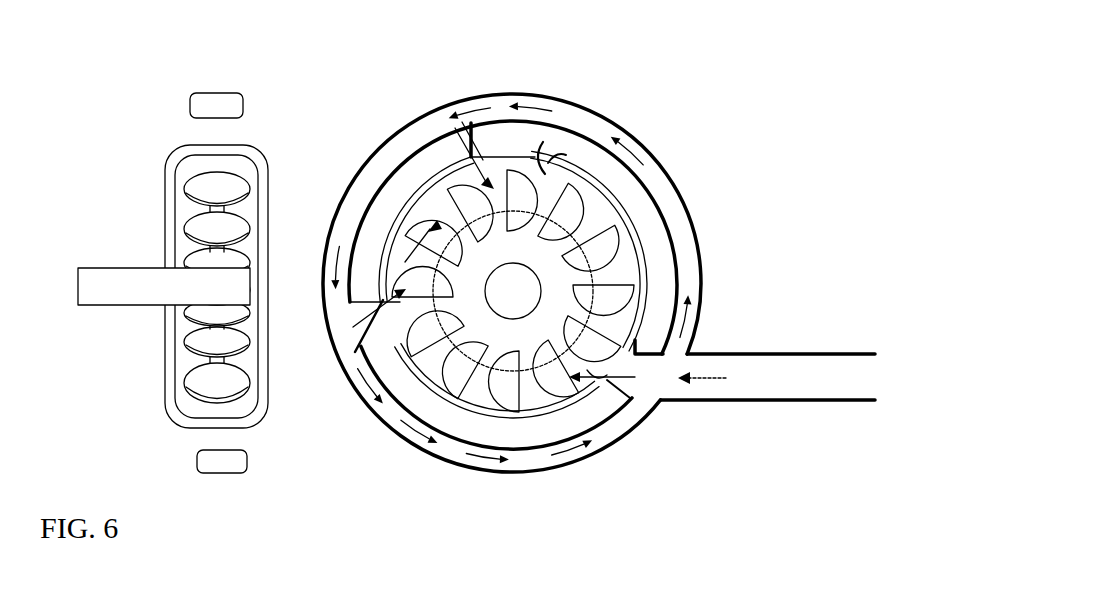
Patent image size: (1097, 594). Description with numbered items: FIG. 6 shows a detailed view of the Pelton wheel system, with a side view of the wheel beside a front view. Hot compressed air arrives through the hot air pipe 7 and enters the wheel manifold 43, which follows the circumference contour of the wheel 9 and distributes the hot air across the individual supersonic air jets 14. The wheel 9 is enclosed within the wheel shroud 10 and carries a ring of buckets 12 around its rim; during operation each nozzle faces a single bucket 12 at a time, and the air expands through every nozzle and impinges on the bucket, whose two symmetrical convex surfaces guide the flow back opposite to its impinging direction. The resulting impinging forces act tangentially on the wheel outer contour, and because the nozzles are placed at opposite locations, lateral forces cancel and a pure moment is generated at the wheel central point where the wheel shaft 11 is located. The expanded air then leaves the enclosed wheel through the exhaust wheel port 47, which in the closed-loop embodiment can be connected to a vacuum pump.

The hot air pipe 7 is at (817, 385).
The wheel 9 is at (480, 385).
The wheel shroud 10 is at (170, 165).
The wheel shaft 11 is at (86, 305).
The buckets 12 is at (187, 183).
The supersonic air jets 14 is at (345, 306).
The wheel manifold 43 is at (217, 93).
The exhaust wheel port 47 is at (547, 155).